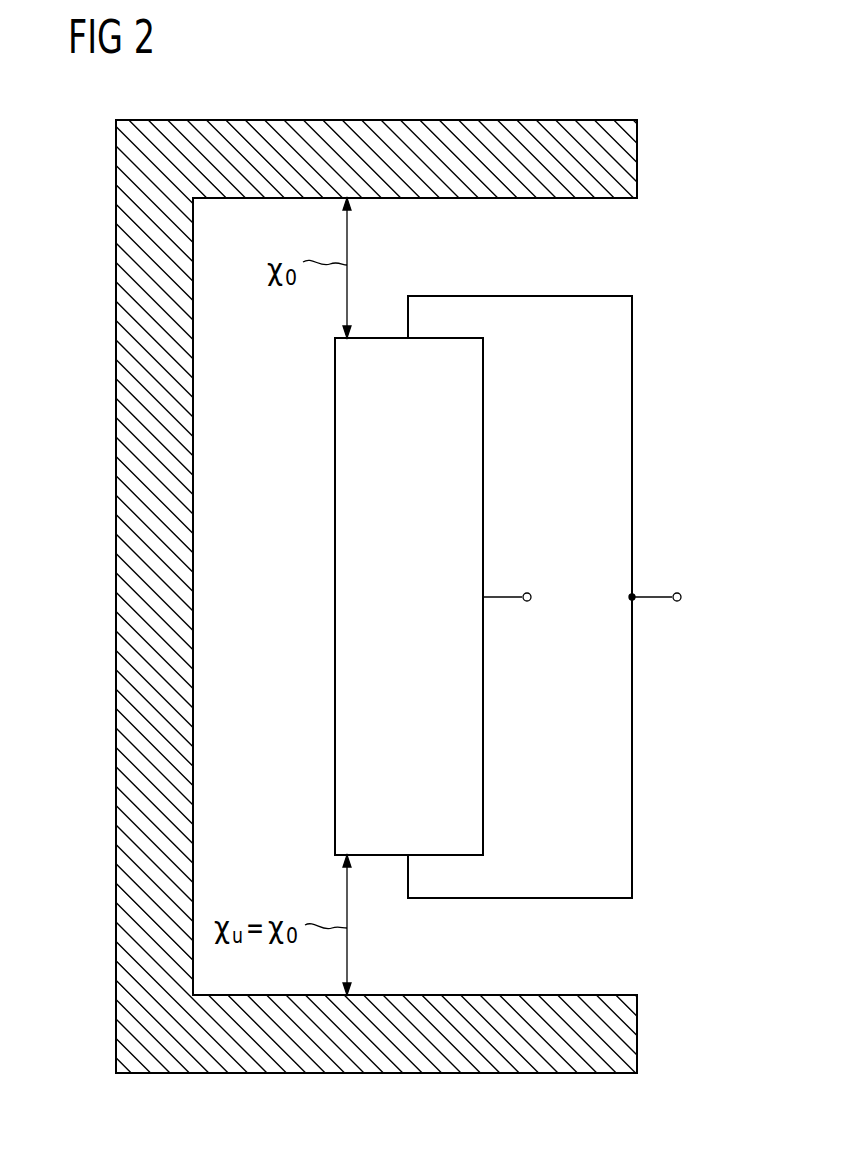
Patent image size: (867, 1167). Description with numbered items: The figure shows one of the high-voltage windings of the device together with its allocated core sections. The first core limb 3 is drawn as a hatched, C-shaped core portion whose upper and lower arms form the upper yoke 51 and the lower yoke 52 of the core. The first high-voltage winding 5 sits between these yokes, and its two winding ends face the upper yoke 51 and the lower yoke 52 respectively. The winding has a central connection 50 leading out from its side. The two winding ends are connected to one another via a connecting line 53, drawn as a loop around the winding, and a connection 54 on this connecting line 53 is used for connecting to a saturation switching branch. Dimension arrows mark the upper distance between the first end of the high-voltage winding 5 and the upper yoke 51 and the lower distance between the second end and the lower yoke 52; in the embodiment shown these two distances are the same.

The first core limb 3 is at (140, 565).
The first high-voltage winding 5 is at (335, 598).
The central connection 50 is at (531, 597).
The upper yoke 51 is at (590, 142).
The lower yoke 52 is at (588, 1047).
The connecting line 53 is at (610, 421).
The connection 54 is at (681, 597).